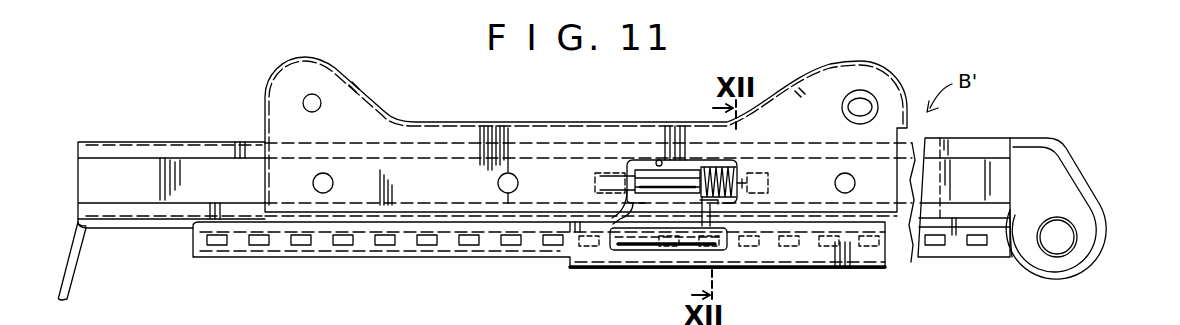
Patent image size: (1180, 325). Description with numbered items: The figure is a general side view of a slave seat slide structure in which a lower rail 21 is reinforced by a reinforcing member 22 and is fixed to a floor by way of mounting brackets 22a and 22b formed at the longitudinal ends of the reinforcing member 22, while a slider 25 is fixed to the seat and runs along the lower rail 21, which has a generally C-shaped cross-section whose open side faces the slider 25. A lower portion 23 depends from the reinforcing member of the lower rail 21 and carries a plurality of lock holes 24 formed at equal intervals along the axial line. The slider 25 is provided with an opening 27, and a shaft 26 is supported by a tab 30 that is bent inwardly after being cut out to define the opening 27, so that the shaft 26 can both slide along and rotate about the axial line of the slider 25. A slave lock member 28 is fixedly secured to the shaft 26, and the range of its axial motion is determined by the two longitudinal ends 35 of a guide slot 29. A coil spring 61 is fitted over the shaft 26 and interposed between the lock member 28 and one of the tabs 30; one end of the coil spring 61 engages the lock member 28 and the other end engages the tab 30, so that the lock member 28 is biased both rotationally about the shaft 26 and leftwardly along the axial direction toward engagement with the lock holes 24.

The lower rail 21 is at (169, 143).
The reinforcing member 22 is at (102, 226).
The mounting bracket 22a is at (80, 268).
The mounting bracket 22b is at (1088, 173).
The lower portion 23 is at (191, 238).
The lock holes 24 is at (252, 238).
The slider 25 is at (499, 122).
The shaft 26 is at (600, 172).
The opening 27 is at (659, 160).
The slave lock member 28 is at (618, 222).
The guide slot 29 is at (722, 252).
The tab 30 is at (618, 158).
The longitudinal ends of guide slot 35 is at (614, 252).
The coil spring 61 is at (706, 160).